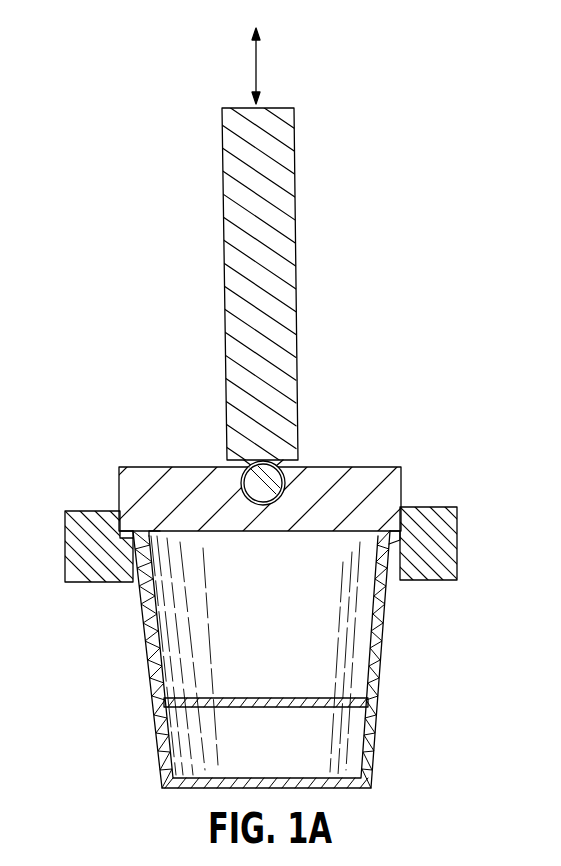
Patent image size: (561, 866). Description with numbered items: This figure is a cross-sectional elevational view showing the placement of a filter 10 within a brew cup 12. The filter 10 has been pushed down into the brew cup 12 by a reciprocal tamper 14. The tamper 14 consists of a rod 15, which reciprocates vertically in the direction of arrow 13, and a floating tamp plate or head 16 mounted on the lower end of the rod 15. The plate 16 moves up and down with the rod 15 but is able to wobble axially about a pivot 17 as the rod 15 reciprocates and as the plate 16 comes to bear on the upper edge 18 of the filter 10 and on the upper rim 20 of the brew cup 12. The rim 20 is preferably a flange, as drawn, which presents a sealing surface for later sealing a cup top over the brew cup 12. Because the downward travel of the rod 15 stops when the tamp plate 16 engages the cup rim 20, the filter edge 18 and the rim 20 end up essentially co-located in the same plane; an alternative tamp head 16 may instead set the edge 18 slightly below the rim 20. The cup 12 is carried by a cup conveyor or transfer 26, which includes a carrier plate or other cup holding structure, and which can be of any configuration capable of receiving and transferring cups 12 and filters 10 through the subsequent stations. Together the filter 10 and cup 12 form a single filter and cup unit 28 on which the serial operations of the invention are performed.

The filter 10 is at (378, 606).
The brew cup 12 is at (373, 744).
The arrow 13 is at (255, 77).
The reciprocal tamper 14 is at (368, 388).
The rod 15 is at (224, 244).
The floating tamp plate or head 16 is at (158, 466).
The pivot 17 is at (297, 466).
The upper edge 18 is at (118, 536).
The upper rim 20 is at (132, 541).
The cup conveyor or transfer 26 is at (452, 494).
The filter and cup unit 28 is at (107, 700).